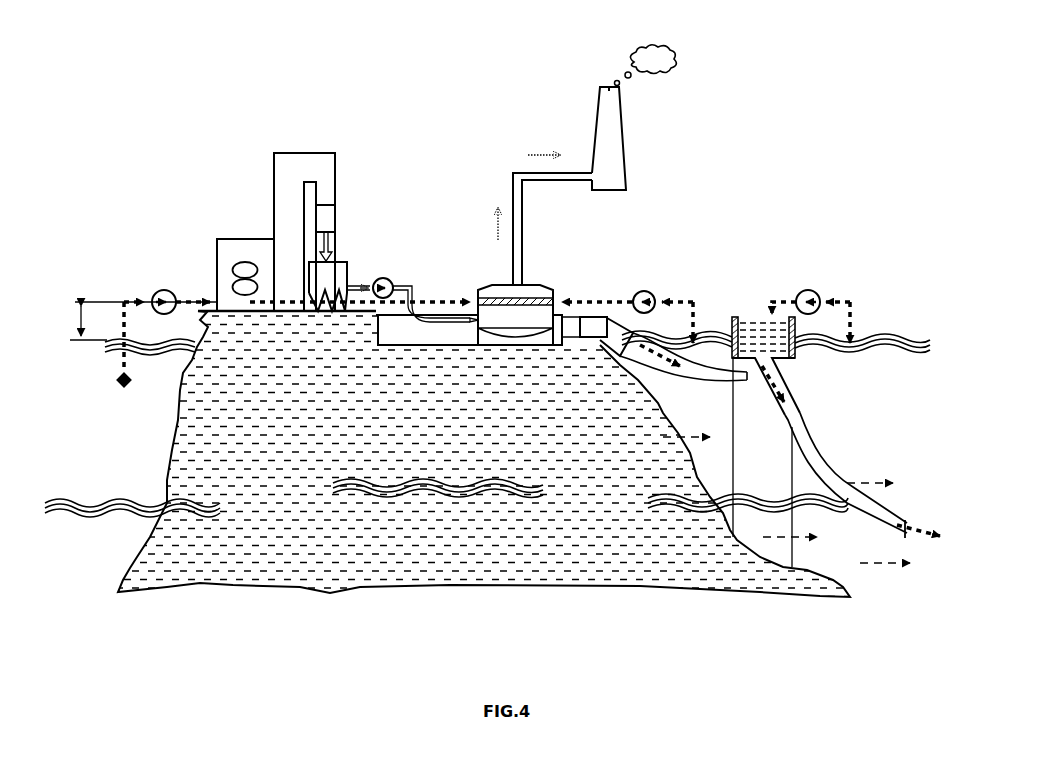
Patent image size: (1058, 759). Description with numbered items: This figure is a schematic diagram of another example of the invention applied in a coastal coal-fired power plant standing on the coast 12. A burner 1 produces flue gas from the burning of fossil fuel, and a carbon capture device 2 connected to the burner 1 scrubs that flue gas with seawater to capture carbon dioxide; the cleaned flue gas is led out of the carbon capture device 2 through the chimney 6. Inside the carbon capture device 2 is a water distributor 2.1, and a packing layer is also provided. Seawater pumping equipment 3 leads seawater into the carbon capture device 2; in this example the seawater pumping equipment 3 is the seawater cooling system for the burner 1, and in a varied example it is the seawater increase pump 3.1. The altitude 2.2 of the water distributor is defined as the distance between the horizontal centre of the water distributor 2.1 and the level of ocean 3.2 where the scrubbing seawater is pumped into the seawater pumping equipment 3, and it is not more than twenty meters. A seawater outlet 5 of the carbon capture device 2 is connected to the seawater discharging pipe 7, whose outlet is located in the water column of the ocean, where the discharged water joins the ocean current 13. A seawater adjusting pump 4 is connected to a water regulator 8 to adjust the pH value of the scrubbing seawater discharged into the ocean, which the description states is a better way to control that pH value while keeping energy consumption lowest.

The burner 1 is at (280, 230).
The carbon capture device 2 is at (494, 290).
The water distributor 2.1 is at (474, 296).
The altitude of water distributor 2.2 is at (75, 302).
The seawater pumping equipment 3 is at (168, 291).
The seawater increase pump 3.1 is at (650, 292).
The level of ocean 3.2 is at (80, 340).
The seawater adjusting pump 4 is at (815, 292).
The seawater outlet 5 is at (568, 328).
The chimney 6 is at (620, 168).
The seawater discharging pipe 7 is at (817, 445).
The water regulator 8 is at (733, 317).
The coast 12 is at (480, 454).
The ocean current 13 is at (858, 480).